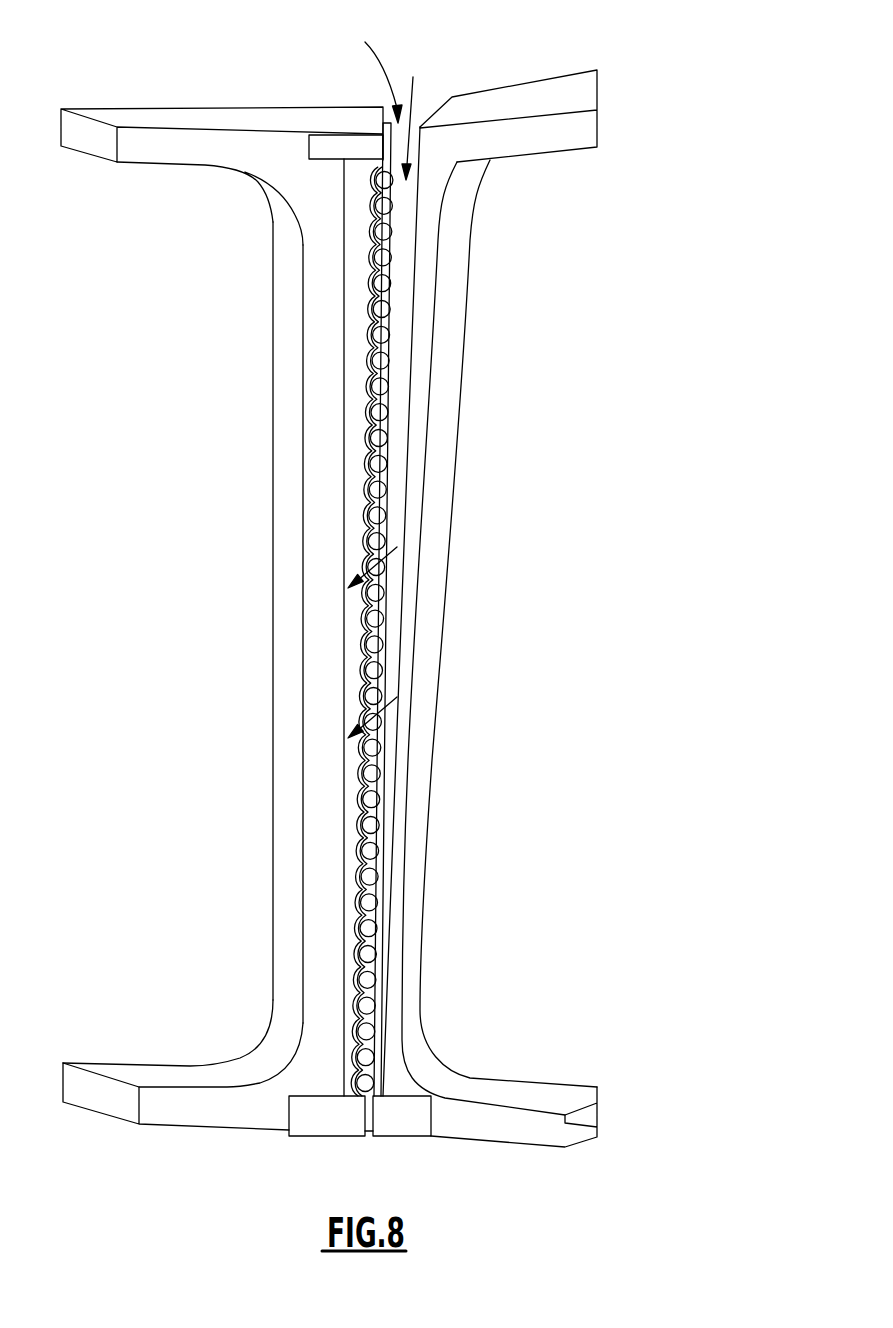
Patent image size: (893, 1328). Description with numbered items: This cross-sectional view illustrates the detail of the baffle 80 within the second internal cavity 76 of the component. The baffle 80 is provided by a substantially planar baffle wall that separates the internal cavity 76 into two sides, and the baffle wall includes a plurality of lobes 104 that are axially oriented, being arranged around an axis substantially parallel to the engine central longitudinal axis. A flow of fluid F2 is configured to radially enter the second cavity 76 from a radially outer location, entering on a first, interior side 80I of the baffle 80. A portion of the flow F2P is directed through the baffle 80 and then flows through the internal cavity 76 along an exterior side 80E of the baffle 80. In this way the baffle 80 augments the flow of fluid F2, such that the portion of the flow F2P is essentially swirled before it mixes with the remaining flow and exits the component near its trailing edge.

The baffle 80 is at (381, 66).
The interior side of the baffle 80I is at (391, 237).
The exterior side of the baffle 80E is at (367, 460).
The second internal cavity 76 is at (400, 328).
The lobes 104 is at (370, 565).
The flow of fluid F2 is at (415, 95).
The portion of the flow F2P is at (398, 556).